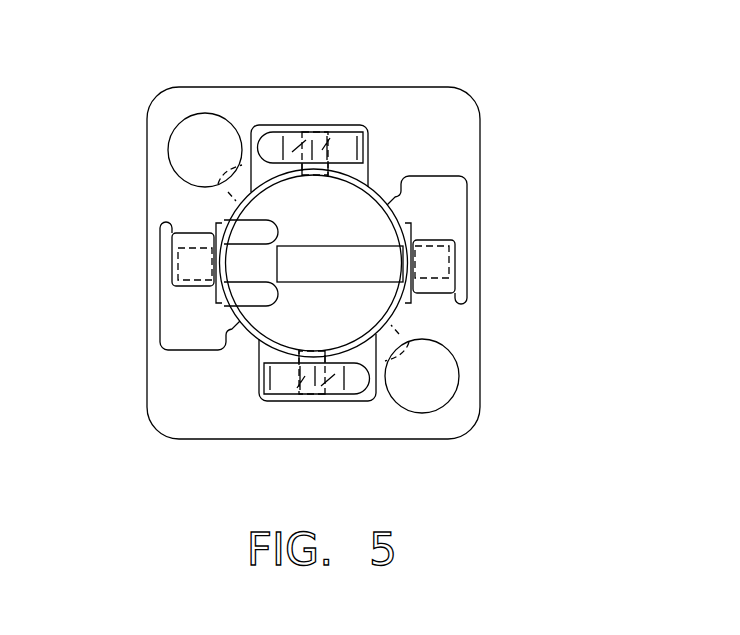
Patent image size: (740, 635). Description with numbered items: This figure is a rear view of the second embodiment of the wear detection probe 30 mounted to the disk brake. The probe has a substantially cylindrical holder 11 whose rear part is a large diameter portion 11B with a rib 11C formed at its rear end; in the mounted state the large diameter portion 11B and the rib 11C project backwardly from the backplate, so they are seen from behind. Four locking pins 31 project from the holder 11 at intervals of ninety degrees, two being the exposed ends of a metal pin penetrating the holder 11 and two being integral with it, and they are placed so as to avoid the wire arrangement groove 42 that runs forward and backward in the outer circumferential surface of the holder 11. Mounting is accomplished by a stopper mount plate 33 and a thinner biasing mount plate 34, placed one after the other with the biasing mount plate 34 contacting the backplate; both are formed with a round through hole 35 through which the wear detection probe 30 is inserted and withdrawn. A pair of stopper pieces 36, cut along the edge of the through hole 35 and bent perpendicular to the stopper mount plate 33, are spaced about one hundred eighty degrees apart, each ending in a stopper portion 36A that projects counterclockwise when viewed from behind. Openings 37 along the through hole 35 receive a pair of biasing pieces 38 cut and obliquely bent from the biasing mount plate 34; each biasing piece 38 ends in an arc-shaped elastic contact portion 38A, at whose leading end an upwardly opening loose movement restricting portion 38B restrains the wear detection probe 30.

The holder 11 is at (370, 178).
The large diameter portion 11B is at (295, 322).
The rib 11C is at (362, 260).
The wear detection probe 30 is at (405, 172).
The locking pins 31 is at (350, 125).
The stopper mount plate 33 is at (473, 333).
The biasing mount plate 34 is at (185, 333).
The through hole 35 is at (243, 308).
The stopper pieces 36 is at (205, 233).
The stopper portion 36A is at (172, 262).
The openings 37 is at (264, 390).
The biasing pieces 38 is at (360, 195).
The elastic contact portion 38A is at (290, 155).
The loose movement restricting portion 38B is at (270, 152).
The wire arrangement groove 42 is at (225, 300).